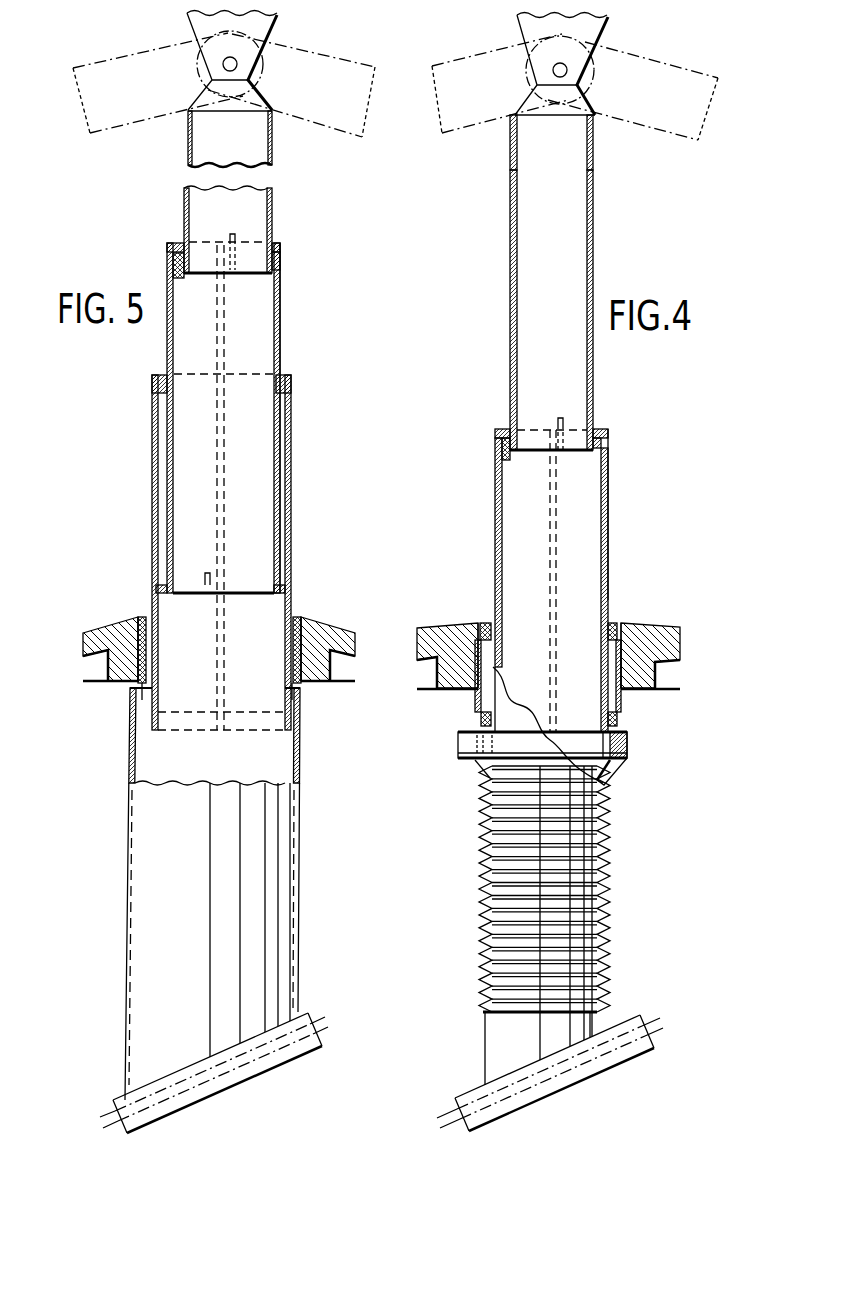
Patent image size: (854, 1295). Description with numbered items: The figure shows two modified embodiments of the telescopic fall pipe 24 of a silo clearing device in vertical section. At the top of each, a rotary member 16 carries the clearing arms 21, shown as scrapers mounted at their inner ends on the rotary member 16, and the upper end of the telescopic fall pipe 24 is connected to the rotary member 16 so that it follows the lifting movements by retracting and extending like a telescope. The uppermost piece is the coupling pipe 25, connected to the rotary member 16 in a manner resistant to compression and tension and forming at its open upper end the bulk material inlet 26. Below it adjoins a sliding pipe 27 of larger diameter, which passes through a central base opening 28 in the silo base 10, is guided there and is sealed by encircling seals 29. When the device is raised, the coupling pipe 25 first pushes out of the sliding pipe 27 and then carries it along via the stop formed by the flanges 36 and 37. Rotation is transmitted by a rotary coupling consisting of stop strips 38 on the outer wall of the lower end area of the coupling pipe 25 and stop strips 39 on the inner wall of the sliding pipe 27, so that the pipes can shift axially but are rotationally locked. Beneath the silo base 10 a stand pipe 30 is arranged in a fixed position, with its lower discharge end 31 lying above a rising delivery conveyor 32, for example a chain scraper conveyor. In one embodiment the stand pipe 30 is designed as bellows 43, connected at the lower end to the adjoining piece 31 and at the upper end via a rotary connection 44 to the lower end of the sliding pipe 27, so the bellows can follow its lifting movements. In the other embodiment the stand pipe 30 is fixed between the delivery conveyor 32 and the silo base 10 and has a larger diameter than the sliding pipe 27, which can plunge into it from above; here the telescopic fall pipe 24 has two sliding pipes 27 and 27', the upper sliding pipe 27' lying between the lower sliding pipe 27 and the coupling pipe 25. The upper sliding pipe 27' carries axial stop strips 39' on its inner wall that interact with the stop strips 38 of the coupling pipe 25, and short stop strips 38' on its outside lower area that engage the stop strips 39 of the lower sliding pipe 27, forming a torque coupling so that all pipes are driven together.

In FIG. 5, the silo base 10 is at (345, 640).
In FIG. 4, the silo base 10 is at (668, 632).
In FIG. 5, the rotary member 16 is at (263, 25).
In FIG. 4, the rotary member 16 is at (603, 30).
In FIG. 5, the clearing arms 21 is at (112, 118).
In FIG. 4, the clearing arms 21 is at (465, 120).
In FIG. 5, the telescopic fall pipe 24 is at (290, 299).
In FIG. 4, the telescopic fall pipe 24 is at (614, 427).
In FIG. 5, the coupling pipe 25 is at (260, 210).
In FIG. 4, the coupling pipe 25 is at (595, 255).
In FIG. 5, the bulk material inlet 26 is at (237, 112).
In FIG. 4, the bulk material inlet 26 is at (560, 112).
In FIG. 5, the sliding pipe 27 is at (243, 552).
In FIG. 4, the sliding pipe 27 is at (573, 610).
In FIG. 5, the upper sliding pipe 27' is at (252, 418).
In FIG. 5, the base opening 28 is at (137, 637).
In FIG. 4, the base opening 28 is at (460, 627).
In FIG. 5, the encircling seals 29 is at (295, 633).
In FIG. 4, the encircling seals 29 is at (615, 624).
In FIG. 5, the stand pipe 30 is at (282, 932).
In FIG. 4, the lower discharge end 31 is at (490, 1047).
In FIG. 5, the delivery conveyor 32 is at (282, 1050).
In FIG. 4, the delivery conveyor 32 is at (577, 1068).
In FIG. 5, the flange 36 is at (171, 280).
In FIG. 4, the flange 36 is at (498, 462).
In FIG. 5, the flange 37 is at (174, 245).
In FIG. 4, the flange 37 is at (500, 428).
In FIG. 5, the stop strips 38 is at (275, 247).
In FIG. 4, the stop strips 38 is at (572, 415).
In FIG. 5, the short stop strips 38' is at (194, 558).
In FIG. 5, the stop strips 39 is at (237, 565).
In FIG. 4, the stop strips 39 is at (568, 581).
In FIG. 5, the axial stop strips 39' is at (242, 322).
In FIG. 4, the bellows 43 is at (597, 890).
In FIG. 4, the rotary connection 44 is at (628, 751).